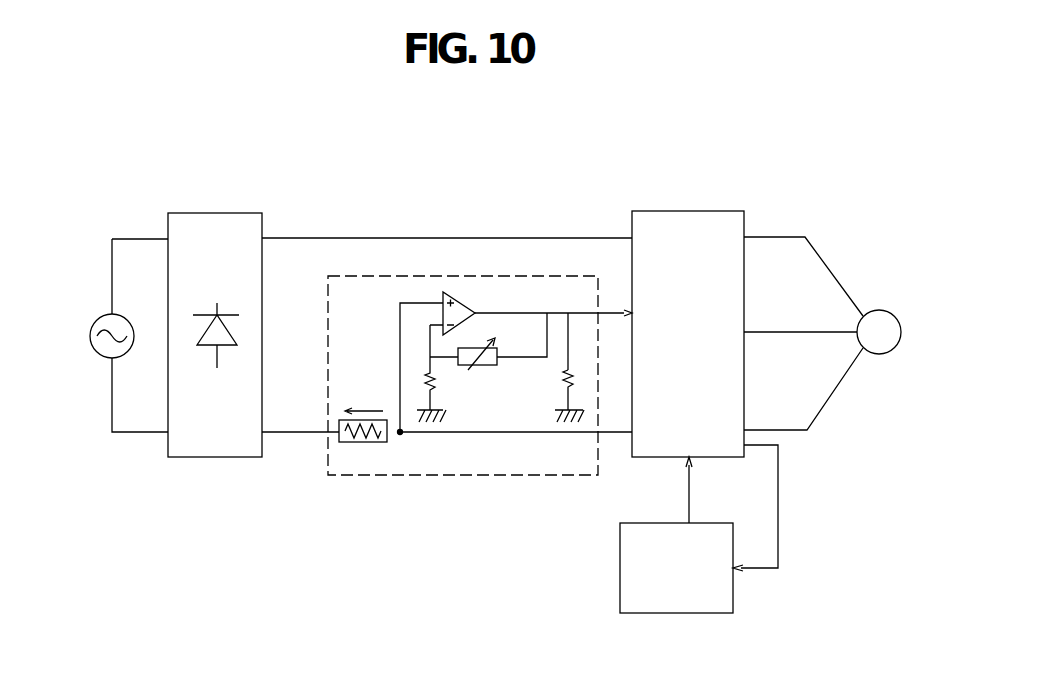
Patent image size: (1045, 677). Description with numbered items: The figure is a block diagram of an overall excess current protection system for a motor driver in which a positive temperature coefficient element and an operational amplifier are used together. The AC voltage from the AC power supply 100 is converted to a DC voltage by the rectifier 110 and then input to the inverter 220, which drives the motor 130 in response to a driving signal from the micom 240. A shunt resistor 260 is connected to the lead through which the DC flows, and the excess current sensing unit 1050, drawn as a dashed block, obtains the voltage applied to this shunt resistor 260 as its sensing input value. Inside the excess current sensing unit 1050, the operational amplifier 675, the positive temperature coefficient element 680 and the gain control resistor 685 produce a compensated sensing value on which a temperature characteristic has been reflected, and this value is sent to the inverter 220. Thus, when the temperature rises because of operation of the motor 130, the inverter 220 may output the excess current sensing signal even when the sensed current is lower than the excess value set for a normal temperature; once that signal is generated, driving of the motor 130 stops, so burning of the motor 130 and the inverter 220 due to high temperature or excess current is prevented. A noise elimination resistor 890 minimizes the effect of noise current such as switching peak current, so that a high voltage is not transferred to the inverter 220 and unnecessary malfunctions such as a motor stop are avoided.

The AC power supply 100 is at (100, 320).
The rectifier 110 is at (214, 213).
The motor 130 is at (880, 310).
The inverter 220 is at (677, 211).
The micom 240 is at (679, 614).
The shunt resistor 260 is at (347, 442).
The operational amplifier 675 is at (462, 290).
The PTC element 680 is at (488, 368).
The gain control resistor 685 is at (448, 400).
The noise elimination resistor 890 is at (556, 400).
The excess current sensing unit 1050 is at (368, 477).